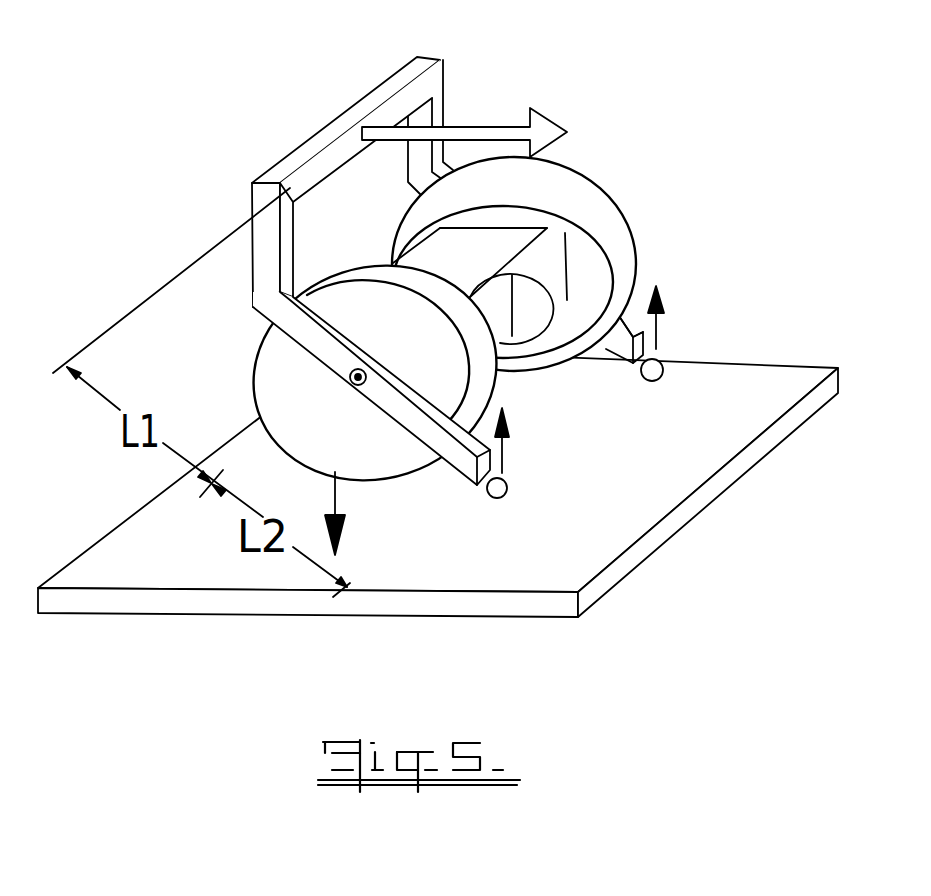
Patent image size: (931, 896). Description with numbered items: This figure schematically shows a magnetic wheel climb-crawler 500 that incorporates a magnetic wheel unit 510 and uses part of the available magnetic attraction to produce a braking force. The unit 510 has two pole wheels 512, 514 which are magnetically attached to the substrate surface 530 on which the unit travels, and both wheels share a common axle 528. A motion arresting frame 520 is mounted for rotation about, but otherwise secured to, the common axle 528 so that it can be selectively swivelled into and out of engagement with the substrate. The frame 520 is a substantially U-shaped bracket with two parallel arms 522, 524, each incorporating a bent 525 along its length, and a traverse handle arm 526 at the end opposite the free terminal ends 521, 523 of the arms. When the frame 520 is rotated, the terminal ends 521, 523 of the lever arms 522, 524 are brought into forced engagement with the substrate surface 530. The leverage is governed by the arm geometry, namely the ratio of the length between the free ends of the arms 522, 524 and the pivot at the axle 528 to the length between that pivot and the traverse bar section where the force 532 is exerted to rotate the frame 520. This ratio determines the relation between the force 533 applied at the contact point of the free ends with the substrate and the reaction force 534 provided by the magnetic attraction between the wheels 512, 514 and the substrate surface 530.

The magnetic wheel climb-crawler 500 is at (438, 314).
The magnetic wheel unit 510 is at (468, 260).
The pole wheel 512 is at (326, 373).
The pole wheel 514 is at (534, 235).
The motion arresting frame 520 is at (347, 288).
The free terminal end 521 is at (543, 507).
The parallel arm 522 is at (383, 428).
The free terminal end 523 is at (714, 346).
The parallel arm 524 is at (670, 302).
The bent 525 is at (300, 175).
The traverse handle arm 526 is at (346, 107).
The common axle 528 is at (274, 394).
The substrate surface 530 is at (722, 425).
The force 532 is at (464, 103).
The force 533 is at (622, 386).
The reaction force 534 is at (376, 513).